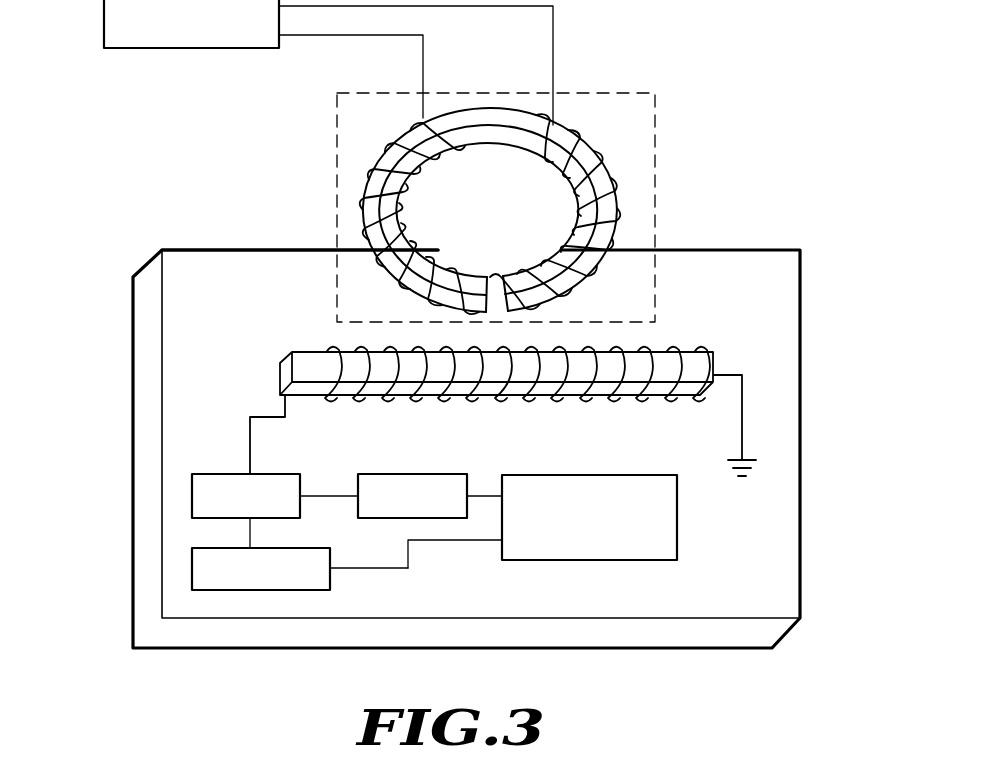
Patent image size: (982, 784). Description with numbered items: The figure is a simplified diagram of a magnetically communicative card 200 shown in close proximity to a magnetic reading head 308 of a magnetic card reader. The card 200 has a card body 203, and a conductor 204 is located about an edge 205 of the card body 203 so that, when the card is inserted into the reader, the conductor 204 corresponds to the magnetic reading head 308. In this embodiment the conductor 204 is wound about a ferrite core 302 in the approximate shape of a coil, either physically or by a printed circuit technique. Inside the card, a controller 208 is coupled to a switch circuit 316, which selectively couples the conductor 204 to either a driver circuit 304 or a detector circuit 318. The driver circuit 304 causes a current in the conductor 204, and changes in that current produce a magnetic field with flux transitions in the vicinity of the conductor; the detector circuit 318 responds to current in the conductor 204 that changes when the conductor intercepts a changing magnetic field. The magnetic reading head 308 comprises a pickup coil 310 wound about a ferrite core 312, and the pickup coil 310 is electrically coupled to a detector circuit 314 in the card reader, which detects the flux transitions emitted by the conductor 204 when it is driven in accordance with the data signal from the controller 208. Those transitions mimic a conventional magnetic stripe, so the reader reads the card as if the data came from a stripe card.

The magnetically communicative card 200 is at (762, 250).
The card body 203 is at (758, 327).
The conductor 204 is at (260, 417).
The edge 205 is at (311, 248).
The controller 208 is at (678, 478).
The ferrite core 302 is at (283, 373).
The driver circuit 304 is at (391, 474).
The magnetic reading head 308 is at (657, 192).
The pickup coil 310 is at (575, 142).
The ferrite core 312 is at (513, 282).
The detector circuit 314 is at (231, 50).
The switch circuit 316 is at (262, 474).
The detector circuit 318 is at (330, 588).